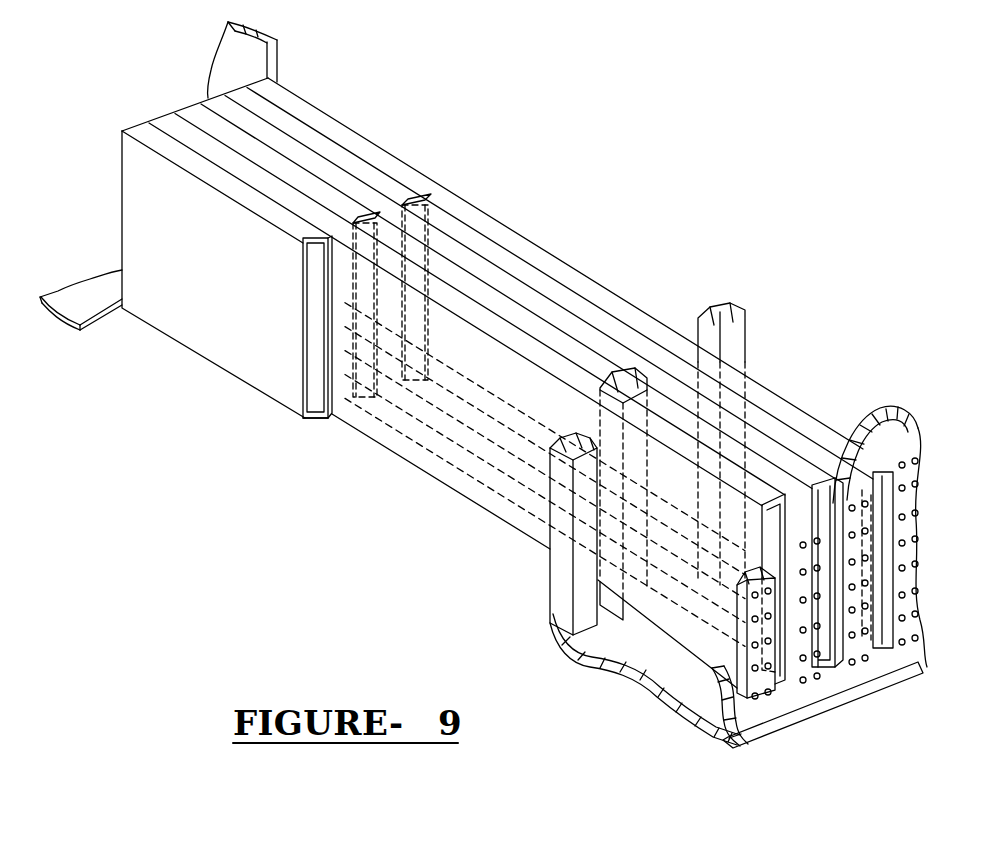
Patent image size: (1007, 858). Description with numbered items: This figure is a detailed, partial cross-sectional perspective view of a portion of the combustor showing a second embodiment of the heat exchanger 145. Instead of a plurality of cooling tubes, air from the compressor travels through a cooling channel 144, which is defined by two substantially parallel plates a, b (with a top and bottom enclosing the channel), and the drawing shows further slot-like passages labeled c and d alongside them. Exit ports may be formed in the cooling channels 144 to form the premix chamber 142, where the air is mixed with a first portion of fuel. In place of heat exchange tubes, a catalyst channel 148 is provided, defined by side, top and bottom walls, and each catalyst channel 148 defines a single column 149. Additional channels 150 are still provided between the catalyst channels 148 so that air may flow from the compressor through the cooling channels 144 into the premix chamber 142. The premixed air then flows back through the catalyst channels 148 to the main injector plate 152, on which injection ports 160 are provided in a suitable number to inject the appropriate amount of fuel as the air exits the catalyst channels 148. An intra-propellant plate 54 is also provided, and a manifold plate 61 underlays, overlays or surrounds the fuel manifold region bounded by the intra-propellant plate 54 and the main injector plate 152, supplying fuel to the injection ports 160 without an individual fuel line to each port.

The premix chamber 142 is at (280, 61).
The cooling channel 144 is at (198, 316).
The heat exchanger 145 is at (650, 190).
The catalyst channel 148 is at (491, 458).
The column 149 is at (522, 244).
The additional channels 150 is at (453, 228).
The main injector plate 152 is at (717, 742).
The injection ports 160 is at (901, 466).
The intra-propellant plate 54 is at (655, 335).
The manifold plate 61 is at (600, 680).
The plate a is at (300, 367).
The plate b is at (333, 383).
The slot c is at (320, 237).
The slot d is at (318, 420).